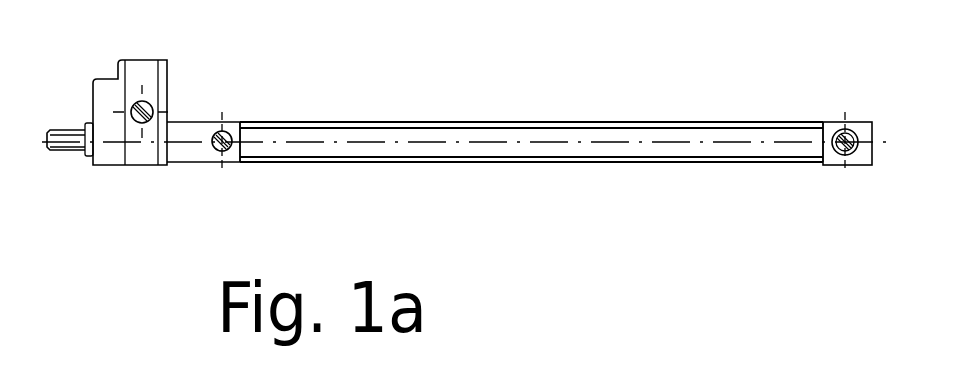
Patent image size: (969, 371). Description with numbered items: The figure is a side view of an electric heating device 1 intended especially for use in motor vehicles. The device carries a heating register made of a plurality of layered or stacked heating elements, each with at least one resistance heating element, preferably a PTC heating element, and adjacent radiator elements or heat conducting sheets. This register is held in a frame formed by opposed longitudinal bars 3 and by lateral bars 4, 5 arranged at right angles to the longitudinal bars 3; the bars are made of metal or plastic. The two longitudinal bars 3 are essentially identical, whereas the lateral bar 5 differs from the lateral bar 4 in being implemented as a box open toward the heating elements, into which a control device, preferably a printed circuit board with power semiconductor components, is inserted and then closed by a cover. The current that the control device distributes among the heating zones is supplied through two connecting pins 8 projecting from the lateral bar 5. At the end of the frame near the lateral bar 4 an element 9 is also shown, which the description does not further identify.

The electric heating device 1 is at (749, 79).
The longitudinal bars 3 is at (465, 126).
The lateral bar 4 is at (858, 165).
The lateral bar 5 is at (152, 167).
The connecting pins 8 is at (63, 152).
The fastening screw 9 is at (836, 160).